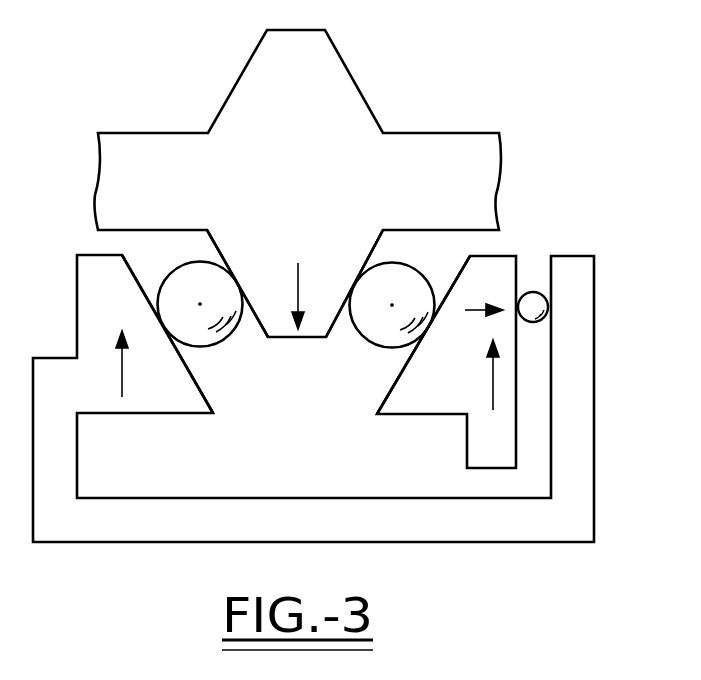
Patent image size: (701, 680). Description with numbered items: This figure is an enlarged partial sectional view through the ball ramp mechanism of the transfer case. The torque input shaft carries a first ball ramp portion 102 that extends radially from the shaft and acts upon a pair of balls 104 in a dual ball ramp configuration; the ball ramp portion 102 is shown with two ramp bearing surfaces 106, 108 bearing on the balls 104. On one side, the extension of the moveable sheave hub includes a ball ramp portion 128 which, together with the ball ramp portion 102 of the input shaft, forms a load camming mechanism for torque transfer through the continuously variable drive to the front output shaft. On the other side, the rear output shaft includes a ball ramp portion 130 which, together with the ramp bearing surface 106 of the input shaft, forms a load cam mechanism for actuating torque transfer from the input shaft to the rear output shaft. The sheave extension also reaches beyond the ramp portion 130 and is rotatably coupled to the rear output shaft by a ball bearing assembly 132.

The first ball ramp portion 102 is at (292, 339).
The ball bearings 104 is at (218, 279).
The ramp bearing surface 106 is at (344, 336).
The ramp bearing surface 108 is at (258, 331).
The ball ramp portion 128 is at (214, 409).
The ball ramp portion 130 is at (380, 405).
The ball bearing assembly 132 is at (542, 302).